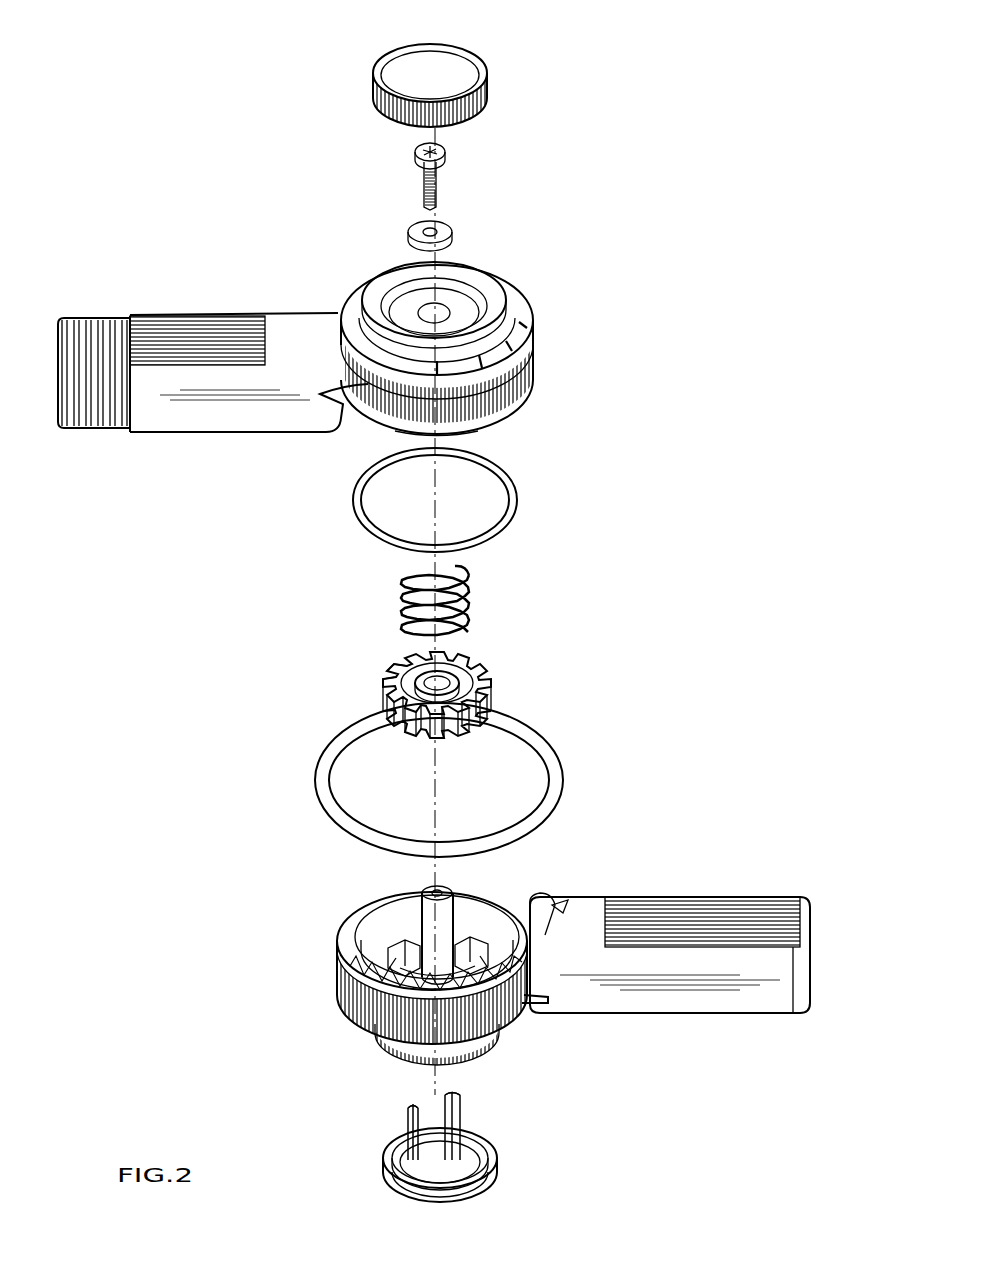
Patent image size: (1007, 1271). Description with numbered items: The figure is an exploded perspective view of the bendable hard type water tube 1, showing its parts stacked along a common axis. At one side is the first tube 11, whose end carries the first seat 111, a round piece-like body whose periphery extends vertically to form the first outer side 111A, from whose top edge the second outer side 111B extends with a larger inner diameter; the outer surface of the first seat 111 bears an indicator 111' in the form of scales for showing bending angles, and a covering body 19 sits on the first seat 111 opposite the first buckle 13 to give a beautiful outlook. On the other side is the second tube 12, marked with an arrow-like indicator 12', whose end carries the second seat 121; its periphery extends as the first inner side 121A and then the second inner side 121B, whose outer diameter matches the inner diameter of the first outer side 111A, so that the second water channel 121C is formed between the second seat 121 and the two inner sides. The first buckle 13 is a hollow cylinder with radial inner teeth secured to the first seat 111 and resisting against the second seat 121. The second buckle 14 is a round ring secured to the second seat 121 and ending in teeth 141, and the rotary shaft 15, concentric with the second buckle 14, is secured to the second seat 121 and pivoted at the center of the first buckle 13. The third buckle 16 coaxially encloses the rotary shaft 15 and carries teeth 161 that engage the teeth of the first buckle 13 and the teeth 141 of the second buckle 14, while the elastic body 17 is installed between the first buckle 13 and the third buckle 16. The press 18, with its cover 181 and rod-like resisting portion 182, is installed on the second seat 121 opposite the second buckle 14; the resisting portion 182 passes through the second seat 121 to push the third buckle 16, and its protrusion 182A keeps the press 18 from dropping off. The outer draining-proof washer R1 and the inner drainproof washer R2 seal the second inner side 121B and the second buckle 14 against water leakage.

The bendable hard type water tube 1 is at (692, 114).
The covering body 19 is at (480, 48).
The first tube 11 is at (303, 328).
The first seat 111 is at (463, 297).
The indicator 111' is at (538, 324).
The first outer side 111A is at (532, 365).
The second outer side 111B is at (535, 390).
The first buckle 13 is at (470, 432).
The inner drainproof washer R2 is at (516, 505).
The elastic body 17 is at (470, 602).
The third buckle 16 is at (510, 675).
The teeth 161 is at (382, 677).
The outer draining-proof washer R1 is at (563, 795).
The second tube 12 is at (666, 986).
The indicator 12' is at (601, 880).
The second seat 121 is at (537, 1047).
The first inner side 121A is at (350, 1010).
The second inner side 121B is at (348, 975).
The second water channel 121C is at (386, 925).
The rotary shaft 15 is at (400, 928).
The teeth 141 is at (472, 948).
The second buckle 14 is at (420, 975).
The press 18 is at (527, 1173).
The cover 181 is at (478, 1190).
The resisting portion 182 is at (420, 1108).
The protrusion 182A is at (443, 1100).